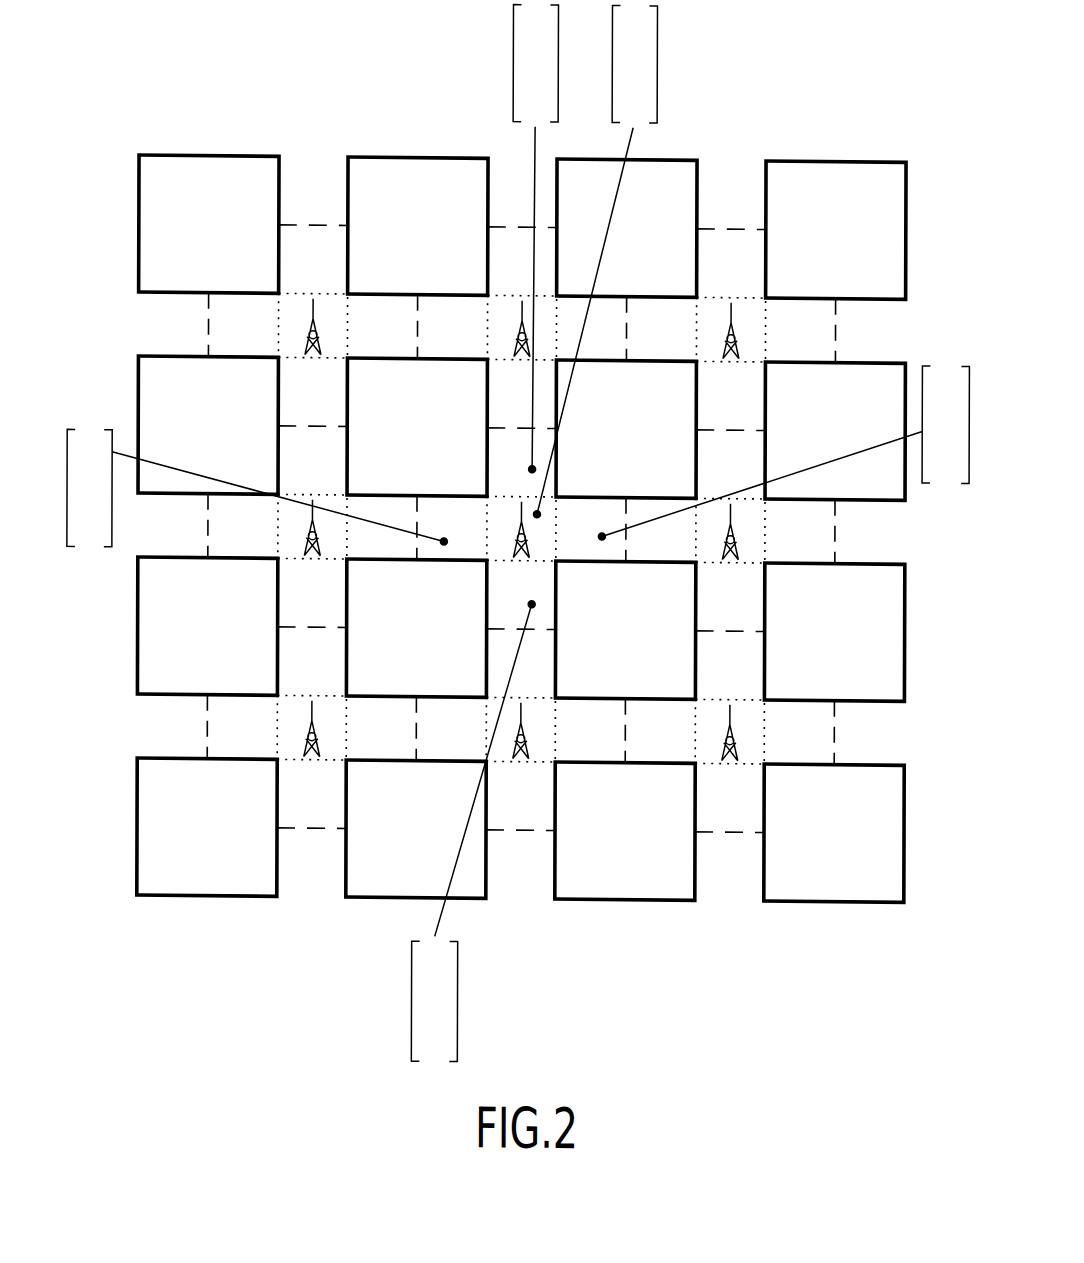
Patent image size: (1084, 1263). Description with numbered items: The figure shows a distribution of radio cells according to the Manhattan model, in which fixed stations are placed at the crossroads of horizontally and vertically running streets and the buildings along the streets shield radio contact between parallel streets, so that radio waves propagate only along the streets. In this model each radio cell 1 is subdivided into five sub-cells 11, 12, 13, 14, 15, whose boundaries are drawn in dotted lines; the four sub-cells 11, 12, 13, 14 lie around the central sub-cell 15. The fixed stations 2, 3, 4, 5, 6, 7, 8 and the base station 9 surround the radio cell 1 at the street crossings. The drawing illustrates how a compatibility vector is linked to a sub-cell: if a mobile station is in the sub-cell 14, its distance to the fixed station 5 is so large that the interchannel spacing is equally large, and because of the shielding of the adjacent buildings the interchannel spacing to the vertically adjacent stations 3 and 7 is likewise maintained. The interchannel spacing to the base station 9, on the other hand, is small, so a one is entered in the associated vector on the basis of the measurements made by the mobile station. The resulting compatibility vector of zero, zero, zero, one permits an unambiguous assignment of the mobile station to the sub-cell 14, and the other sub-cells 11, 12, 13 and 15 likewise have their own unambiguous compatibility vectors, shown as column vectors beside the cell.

The radio cell 1 is at (529, 530).
The fixed station 2 is at (323, 327).
The fixed station 3 is at (532, 329).
The fixed station 4 is at (741, 331).
The fixed station 5 is at (740, 532).
The fixed station 6 is at (740, 733).
The fixed station 7 is at (531, 731).
The fixed station 8 is at (322, 729).
The base station 9 is at (322, 528).
The sub-cell 11 is at (515, 454).
The sub-cell 12 is at (567, 521).
The sub-cell 13 is at (497, 590).
The sub-cell 14 is at (448, 522).
The central sub-cell 15 is at (494, 522).